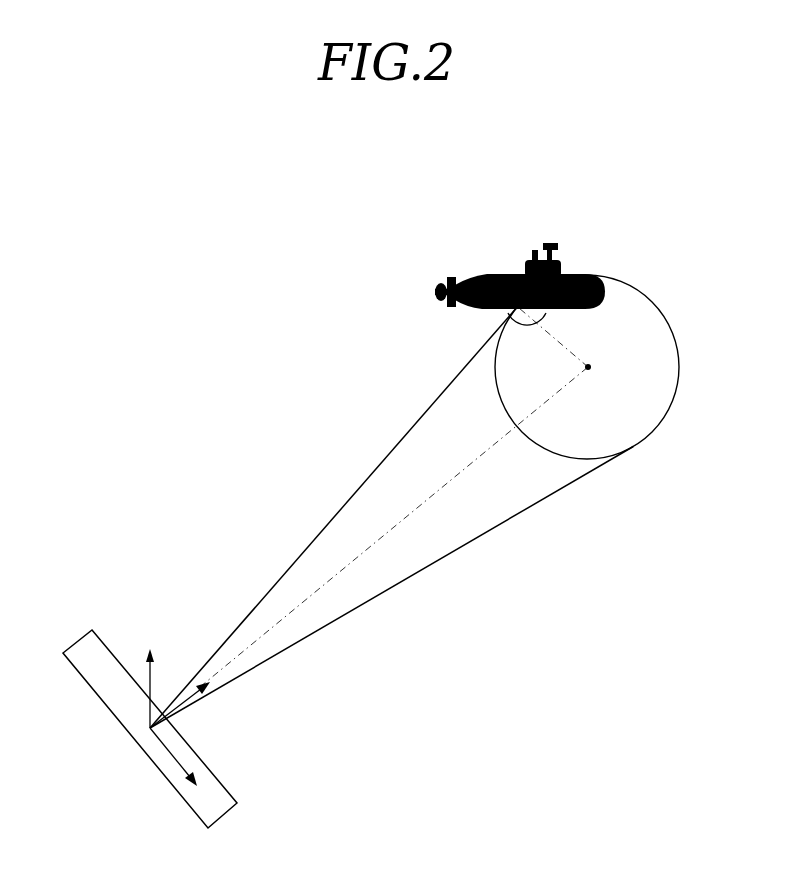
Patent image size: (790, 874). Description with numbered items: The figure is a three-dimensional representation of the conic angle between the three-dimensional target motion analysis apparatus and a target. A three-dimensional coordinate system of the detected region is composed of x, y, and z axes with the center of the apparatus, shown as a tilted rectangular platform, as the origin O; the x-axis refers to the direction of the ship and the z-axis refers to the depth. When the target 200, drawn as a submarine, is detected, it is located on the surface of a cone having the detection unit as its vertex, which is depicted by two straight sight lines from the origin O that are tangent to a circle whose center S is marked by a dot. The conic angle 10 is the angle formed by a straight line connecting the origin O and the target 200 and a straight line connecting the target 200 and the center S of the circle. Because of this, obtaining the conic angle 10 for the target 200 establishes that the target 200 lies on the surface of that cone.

The target 200 is at (500, 273).
The conic angle 10 is at (529, 326).
The center of the circle S is at (587, 367).
The origin O is at (150, 728).